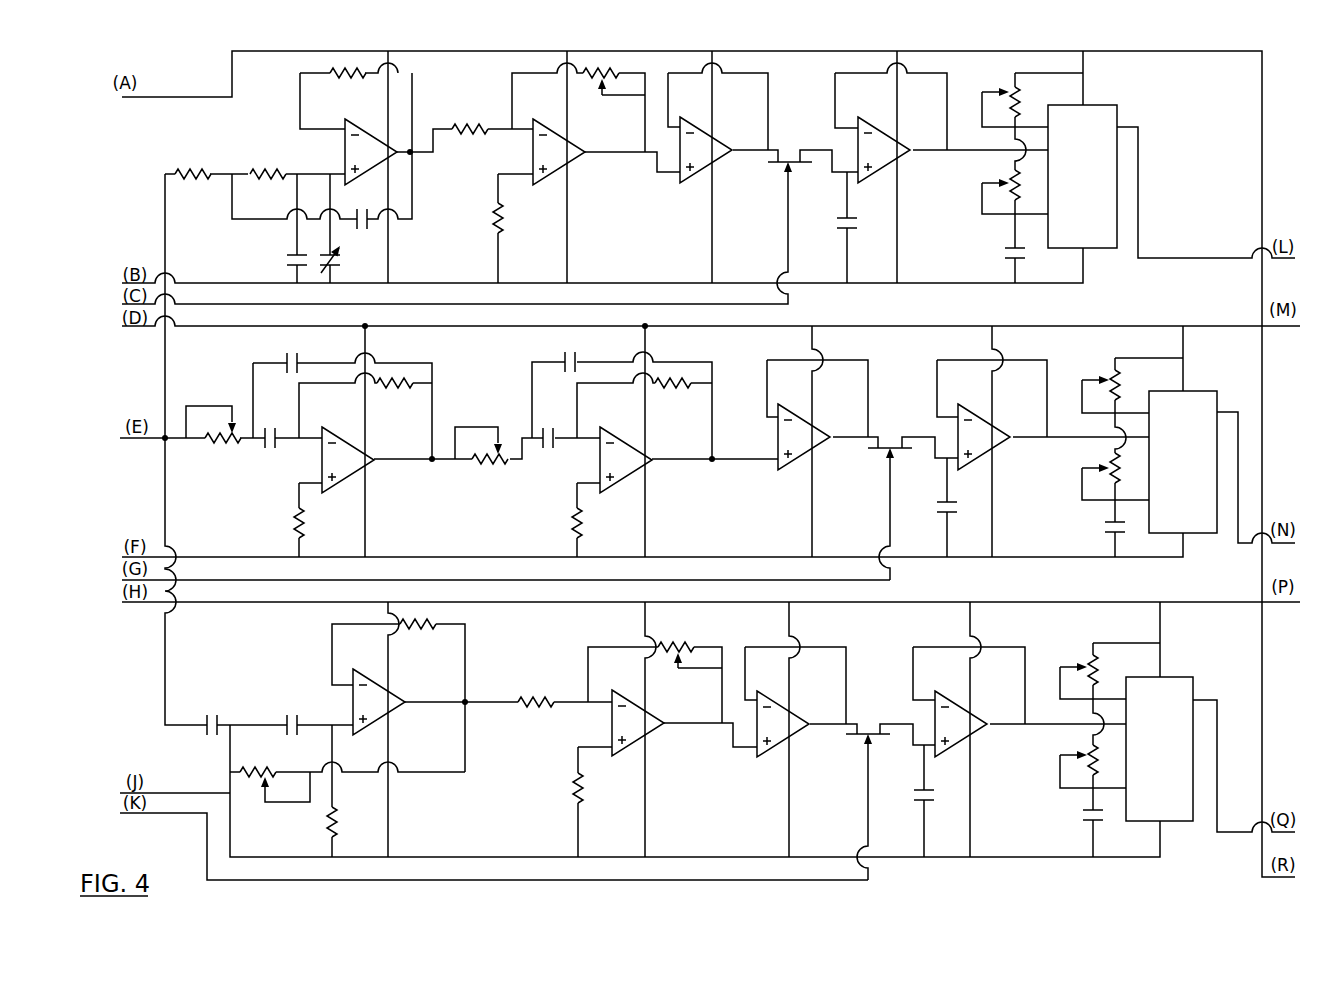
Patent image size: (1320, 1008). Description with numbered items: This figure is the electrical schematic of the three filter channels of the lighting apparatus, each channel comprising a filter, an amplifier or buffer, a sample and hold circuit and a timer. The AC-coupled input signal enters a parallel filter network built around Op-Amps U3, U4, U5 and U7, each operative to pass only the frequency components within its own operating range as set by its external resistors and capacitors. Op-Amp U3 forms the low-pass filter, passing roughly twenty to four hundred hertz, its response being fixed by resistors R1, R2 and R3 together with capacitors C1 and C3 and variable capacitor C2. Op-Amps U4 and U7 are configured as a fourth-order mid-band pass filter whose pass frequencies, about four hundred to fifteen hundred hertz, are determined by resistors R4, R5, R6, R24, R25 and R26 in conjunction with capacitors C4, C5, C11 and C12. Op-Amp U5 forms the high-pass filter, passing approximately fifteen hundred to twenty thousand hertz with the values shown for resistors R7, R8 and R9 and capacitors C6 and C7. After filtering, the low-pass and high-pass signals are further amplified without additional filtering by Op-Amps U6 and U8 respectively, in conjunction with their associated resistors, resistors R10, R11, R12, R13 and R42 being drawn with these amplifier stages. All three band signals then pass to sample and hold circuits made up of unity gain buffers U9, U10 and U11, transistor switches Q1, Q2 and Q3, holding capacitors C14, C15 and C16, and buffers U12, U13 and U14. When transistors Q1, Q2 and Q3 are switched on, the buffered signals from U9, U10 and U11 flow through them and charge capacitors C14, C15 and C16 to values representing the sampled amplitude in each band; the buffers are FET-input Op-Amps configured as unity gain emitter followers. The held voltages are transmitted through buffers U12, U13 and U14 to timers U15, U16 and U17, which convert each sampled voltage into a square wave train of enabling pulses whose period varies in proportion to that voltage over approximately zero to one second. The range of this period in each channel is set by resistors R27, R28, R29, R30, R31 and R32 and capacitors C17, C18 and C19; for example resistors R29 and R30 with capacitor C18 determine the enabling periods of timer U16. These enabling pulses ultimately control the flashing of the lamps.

The resistor R1 is at (187, 174).
The resistor R2 is at (268, 174).
The resistor R3 is at (326, 77).
The resistor R4 is at (213, 445).
The resistor R5 is at (282, 520).
The resistor R6 is at (371, 390).
The resistor R7 is at (347, 773).
The resistor R8 is at (407, 688).
The resistor R9 is at (320, 791).
The resistor R10 is at (475, 130).
The resistor R11 is at (525, 515).
The potentiometer R12 is at (586, 101).
The potentiometer R13 is at (664, 671).
The resistor R24 is at (645, 390).
The resistor R25 is at (566, 520).
The resistor R26 is at (483, 468).
The resistor R27 is at (1023, 111).
The resistor R28 is at (981, 201).
The resistor R29 is at (1124, 395).
The resistor R30 is at (1081, 482).
The resistor R31 is at (1100, 684).
The resistor R32 is at (1059, 769).
The resistor R42 is at (539, 703).
The capacitor C1 is at (251, 228).
The variable capacitor C2 is at (343, 228).
The capacitor C3 is at (386, 213).
The capacitor C4 is at (342, 398).
The capacitor C5 is at (286, 439).
The capacitor C6 is at (216, 702).
The capacitor C7 is at (294, 702).
The capacitor C11 is at (562, 439).
The capacitor C12 is at (619, 398).
The capacitor C14 is at (841, 227).
The capacitor C15 is at (940, 507).
The capacitor C16 is at (919, 801).
The capacitor C17 is at (1012, 265).
The capacitor C18 is at (1113, 539).
The capacitor C19 is at (1087, 833).
The Op-Amp U3 is at (396, 146).
The Op-Amp U4 is at (378, 455).
The Op-Amp U5 is at (408, 700).
The Op-Amp U6 is at (587, 151).
The Op-Amp U7 is at (658, 455).
The Op-Amp U8 is at (666, 721).
The unity gain buffer U9 is at (706, 158).
The unity gain buffer U10 is at (806, 436).
The unity gain buffer U11 is at (783, 722).
The buffer U12 is at (896, 142).
The buffer U13 is at (987, 436).
The buffer U14 is at (968, 720).
The timer U15 is at (1090, 108).
The timer U16 is at (1192, 395).
The timer U17 is at (1168, 680).
The transistor switch Q1 is at (795, 150).
The transistor switch Q2 is at (895, 497).
The transistor switch Q3 is at (872, 790).